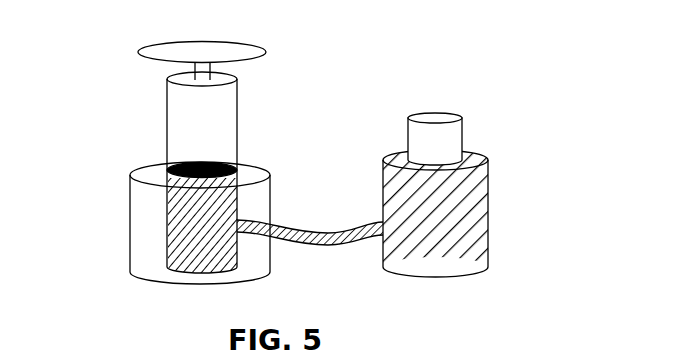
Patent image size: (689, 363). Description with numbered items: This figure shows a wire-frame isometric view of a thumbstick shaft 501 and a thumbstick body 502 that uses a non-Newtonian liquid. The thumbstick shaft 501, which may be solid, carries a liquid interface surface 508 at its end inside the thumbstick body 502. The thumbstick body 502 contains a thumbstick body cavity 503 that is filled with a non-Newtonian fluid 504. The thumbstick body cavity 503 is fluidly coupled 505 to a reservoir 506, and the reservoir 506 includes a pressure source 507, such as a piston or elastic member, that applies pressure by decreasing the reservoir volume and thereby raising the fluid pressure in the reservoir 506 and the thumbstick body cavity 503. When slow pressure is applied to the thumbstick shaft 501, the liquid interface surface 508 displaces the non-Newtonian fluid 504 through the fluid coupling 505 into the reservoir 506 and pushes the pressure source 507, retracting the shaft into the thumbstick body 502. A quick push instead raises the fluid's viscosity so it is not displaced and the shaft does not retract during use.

The thumbstick shaft 501 is at (237, 117).
The thumbstick body 502 is at (271, 182).
The thumbstick body cavity 503 is at (167, 187).
The non-Newtonian fluid 504 is at (168, 253).
The fluid coupling 505 is at (298, 239).
The reservoir 506 is at (488, 198).
The pressure source 507 is at (462, 130).
The liquid interface surface 508 is at (240, 167).